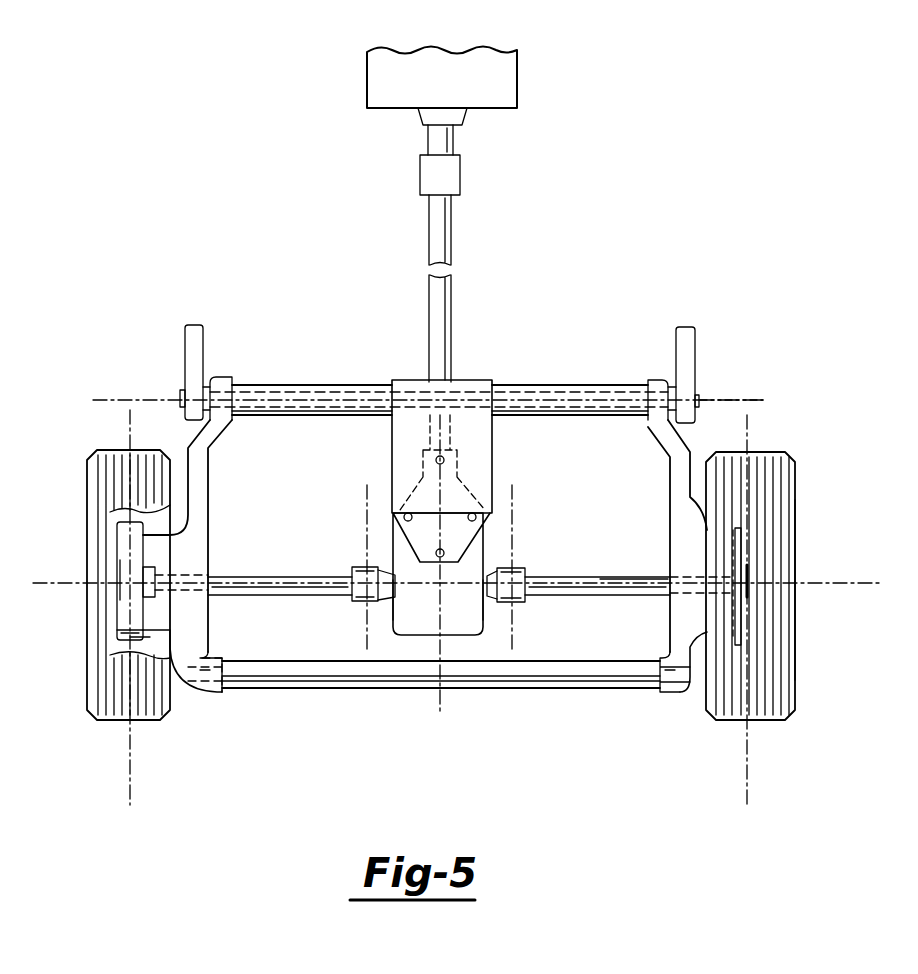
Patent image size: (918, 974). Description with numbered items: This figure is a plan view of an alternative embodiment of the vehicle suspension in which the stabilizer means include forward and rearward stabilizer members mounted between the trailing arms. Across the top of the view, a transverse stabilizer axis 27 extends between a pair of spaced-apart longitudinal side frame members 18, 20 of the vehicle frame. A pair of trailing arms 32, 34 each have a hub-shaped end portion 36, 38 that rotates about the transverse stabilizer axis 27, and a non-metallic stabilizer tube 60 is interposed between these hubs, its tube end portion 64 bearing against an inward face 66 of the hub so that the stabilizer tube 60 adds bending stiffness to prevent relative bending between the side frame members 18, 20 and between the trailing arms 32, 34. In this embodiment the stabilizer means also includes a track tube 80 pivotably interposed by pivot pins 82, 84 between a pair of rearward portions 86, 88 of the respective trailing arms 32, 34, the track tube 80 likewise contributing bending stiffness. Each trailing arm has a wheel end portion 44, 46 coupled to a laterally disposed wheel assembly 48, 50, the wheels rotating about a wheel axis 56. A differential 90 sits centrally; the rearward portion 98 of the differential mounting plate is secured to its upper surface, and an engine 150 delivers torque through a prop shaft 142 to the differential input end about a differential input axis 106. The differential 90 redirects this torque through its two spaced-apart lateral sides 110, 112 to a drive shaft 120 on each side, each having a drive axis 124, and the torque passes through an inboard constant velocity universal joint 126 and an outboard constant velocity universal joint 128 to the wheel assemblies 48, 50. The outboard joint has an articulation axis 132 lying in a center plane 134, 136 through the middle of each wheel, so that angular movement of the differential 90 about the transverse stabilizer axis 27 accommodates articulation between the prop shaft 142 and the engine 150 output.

The engine 150 is at (512, 45).
The prop shaft 142 is at (455, 230).
The stabilizer tube 60 is at (592, 333).
The tube end portion 64 is at (230, 422).
The inward face 66 is at (650, 428).
The hub-shaped end portion 38 is at (223, 380).
The hub-shaped end portion 36 is at (653, 380).
The side frame member 18 is at (202, 324).
The side frame member 20 is at (690, 327).
The transverse stabilizer axis 27 is at (748, 398).
The trailing arm 34 is at (197, 495).
The trailing arm 32 is at (668, 487).
The differential 90 is at (390, 627).
The rearward portion 98 is at (483, 523).
The lateral side 112 is at (400, 606).
The lateral side 110 is at (483, 617).
The inboard constant velocity universal joint 126 is at (357, 567).
The drive axis 124 is at (647, 552).
The drive shaft 120 is at (606, 594).
The differential input axis 106 is at (450, 711).
The wheel end portion 46 is at (197, 630).
The wheel end portion 44 is at (667, 623).
The articulation axis 132 is at (150, 562).
The outboard constant velocity universal joint 128 is at (140, 587).
The rearward portion 88 is at (213, 653).
The rearward portion 86 is at (662, 648).
The pivot pin 84 is at (218, 697).
The pivot pin 82 is at (668, 698).
The wheel assembly 50 is at (150, 645).
The wheel axis 56 is at (803, 581).
The wheel assembly 48 is at (728, 557).
The track tube 80 is at (398, 696).
The center plane 136 is at (138, 792).
The center plane 134 is at (745, 797).